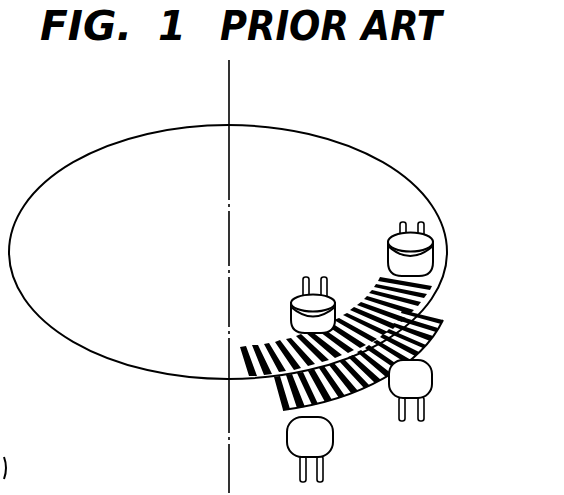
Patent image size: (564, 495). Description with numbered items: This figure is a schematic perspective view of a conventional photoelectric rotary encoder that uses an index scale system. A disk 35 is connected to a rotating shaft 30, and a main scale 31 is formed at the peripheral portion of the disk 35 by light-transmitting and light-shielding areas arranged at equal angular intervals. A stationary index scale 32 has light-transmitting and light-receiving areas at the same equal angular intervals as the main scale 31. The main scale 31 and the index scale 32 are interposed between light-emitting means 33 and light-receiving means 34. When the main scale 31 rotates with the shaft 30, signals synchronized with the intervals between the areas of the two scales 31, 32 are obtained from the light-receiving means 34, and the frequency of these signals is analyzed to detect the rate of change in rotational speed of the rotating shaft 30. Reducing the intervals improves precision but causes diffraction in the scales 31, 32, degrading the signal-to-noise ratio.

The rotating shaft 30 is at (228, 474).
The main scale 31 is at (440, 284).
The stationary index scale 32 is at (441, 322).
The light-emitting means 33 is at (432, 386).
The light-receiving means 34 is at (292, 312).
The disk 35 is at (427, 201).